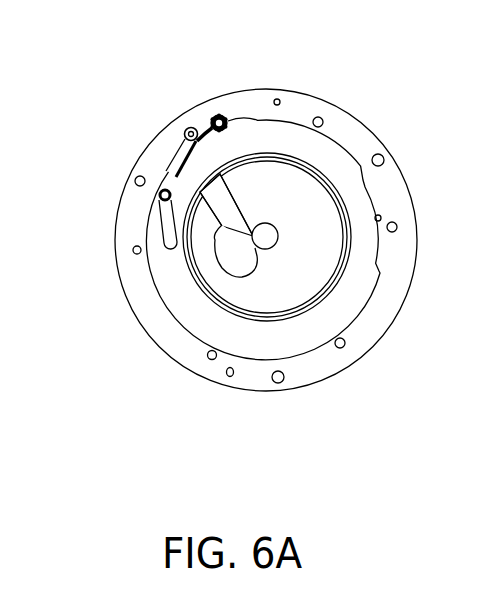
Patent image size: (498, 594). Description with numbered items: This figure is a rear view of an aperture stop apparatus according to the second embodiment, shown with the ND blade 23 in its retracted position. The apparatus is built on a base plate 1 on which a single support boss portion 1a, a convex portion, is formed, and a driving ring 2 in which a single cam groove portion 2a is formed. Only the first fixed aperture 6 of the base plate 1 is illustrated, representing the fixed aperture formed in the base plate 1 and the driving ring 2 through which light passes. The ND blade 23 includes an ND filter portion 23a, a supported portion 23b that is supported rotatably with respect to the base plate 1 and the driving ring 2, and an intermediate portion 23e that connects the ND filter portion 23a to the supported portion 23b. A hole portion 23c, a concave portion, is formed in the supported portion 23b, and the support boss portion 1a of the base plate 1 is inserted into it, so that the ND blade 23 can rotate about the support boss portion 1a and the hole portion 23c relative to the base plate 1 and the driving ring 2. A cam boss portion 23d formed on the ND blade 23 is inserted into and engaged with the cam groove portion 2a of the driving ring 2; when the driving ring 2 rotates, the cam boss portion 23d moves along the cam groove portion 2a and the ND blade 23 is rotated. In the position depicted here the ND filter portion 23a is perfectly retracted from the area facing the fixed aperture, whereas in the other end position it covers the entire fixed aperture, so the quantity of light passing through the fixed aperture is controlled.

The base plate 1 is at (403, 177).
The support boss portion 1a is at (192, 89).
The driving ring 2 is at (345, 305).
The cam groove portion 2a is at (162, 222).
The first fixed aperture 6 is at (265, 236).
The ND blade 23 is at (174, 324).
The ND filter portion 23a is at (223, 261).
The supported portion 23b is at (170, 139).
The hole portion 23c is at (191, 127).
The cam boss portion 23d is at (159, 198).
The intermediate portion 23e is at (221, 226).